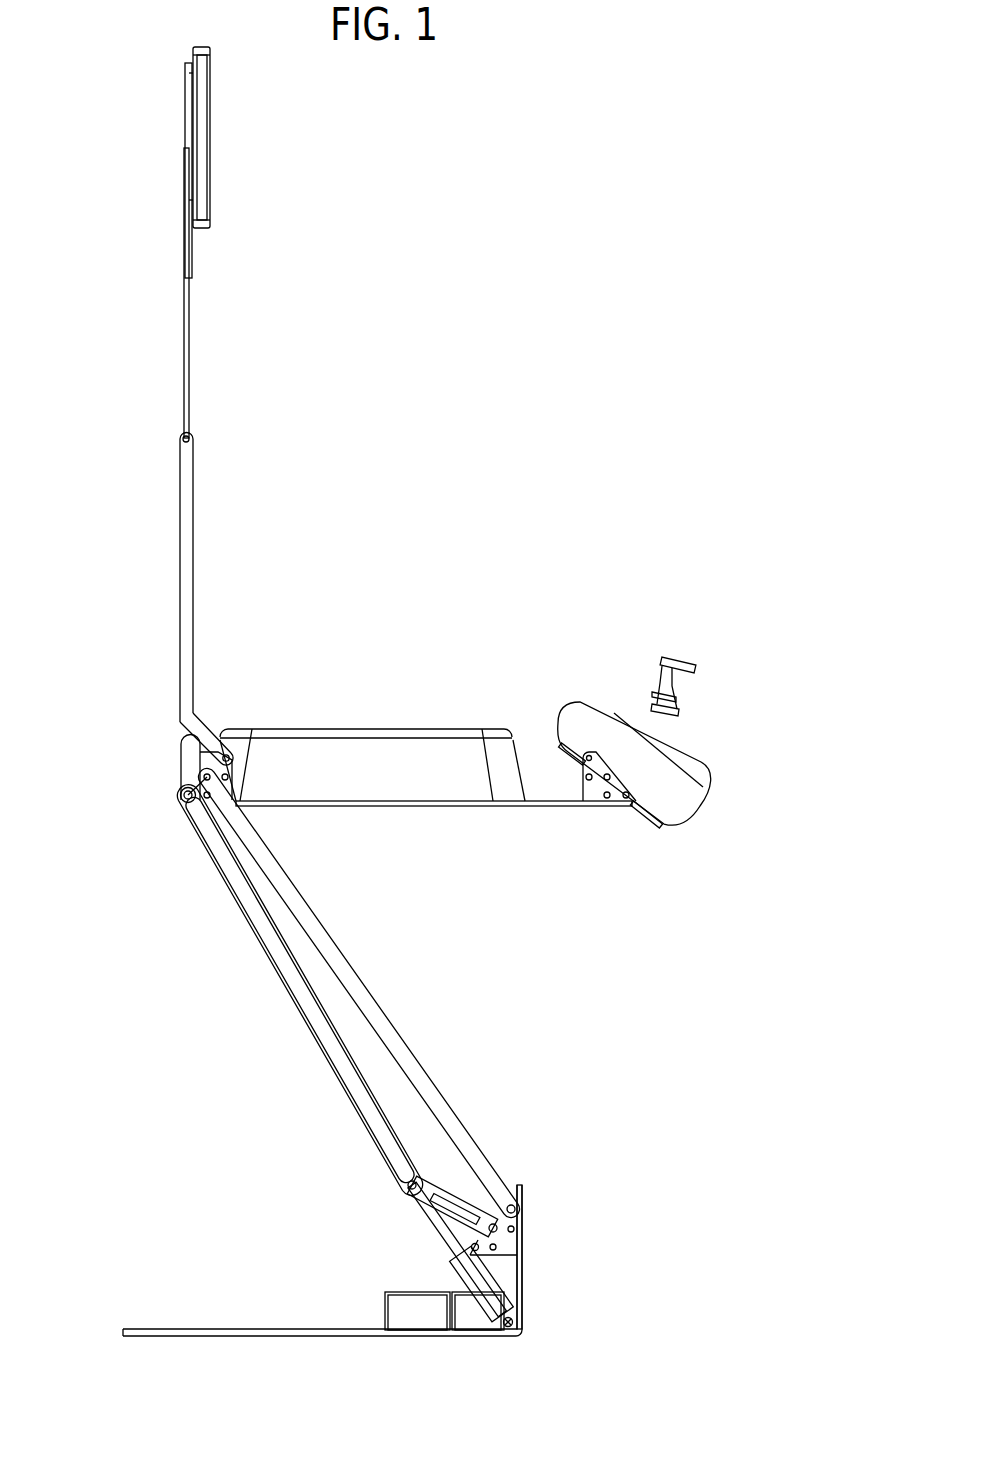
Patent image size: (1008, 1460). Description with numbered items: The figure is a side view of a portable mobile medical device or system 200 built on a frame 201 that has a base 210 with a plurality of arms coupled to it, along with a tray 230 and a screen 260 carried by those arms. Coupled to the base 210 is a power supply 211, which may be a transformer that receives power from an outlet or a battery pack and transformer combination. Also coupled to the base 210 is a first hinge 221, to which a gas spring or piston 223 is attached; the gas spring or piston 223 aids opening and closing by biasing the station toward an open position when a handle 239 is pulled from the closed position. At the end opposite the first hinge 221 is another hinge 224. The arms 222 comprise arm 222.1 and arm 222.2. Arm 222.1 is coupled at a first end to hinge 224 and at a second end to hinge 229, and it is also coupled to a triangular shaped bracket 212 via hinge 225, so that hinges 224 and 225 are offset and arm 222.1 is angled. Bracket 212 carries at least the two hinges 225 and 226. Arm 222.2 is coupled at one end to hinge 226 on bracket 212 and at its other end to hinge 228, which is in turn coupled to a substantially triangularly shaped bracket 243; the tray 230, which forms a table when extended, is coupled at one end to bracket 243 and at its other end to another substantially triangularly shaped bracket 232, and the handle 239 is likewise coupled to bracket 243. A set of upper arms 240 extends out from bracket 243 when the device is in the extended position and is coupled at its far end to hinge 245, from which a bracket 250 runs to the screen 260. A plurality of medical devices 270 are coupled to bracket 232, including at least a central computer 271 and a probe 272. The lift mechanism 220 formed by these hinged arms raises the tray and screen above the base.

The portable mobile medical device or system 200 is at (380, 186).
The frame 201 is at (246, 497).
The base 210 is at (231, 1329).
The power supply 211 is at (413, 1313).
The bracket 212 is at (521, 1220).
The lift mechanism 220 is at (454, 1069).
The first hinge 221 is at (522, 1323).
The arms 222 is at (207, 980).
The arm 222.1 is at (290, 990).
The arm 222.2 is at (334, 952).
The gas spring or piston 223 is at (478, 1278).
The hinge 224 is at (405, 1186).
The hinge 225 is at (497, 1230).
The hinge 226 is at (511, 1204).
The hinge 228 is at (204, 773).
The hinge 229 is at (182, 795).
The tray 230 is at (527, 808).
The bracket 232 is at (598, 796).
The handle 239 is at (183, 740).
The arms 240 is at (185, 568).
The bracket 243 is at (199, 779).
The hinge 245 is at (181, 438).
The bracket 250 is at (183, 288).
The screen 260 is at (211, 163).
The medical devices 270 is at (752, 725).
The central computer 271 is at (706, 806).
The probe 272 is at (695, 667).